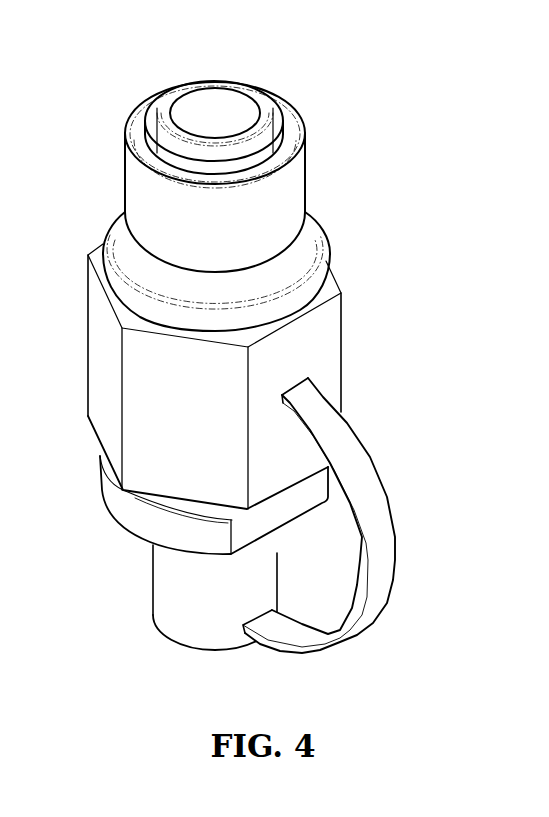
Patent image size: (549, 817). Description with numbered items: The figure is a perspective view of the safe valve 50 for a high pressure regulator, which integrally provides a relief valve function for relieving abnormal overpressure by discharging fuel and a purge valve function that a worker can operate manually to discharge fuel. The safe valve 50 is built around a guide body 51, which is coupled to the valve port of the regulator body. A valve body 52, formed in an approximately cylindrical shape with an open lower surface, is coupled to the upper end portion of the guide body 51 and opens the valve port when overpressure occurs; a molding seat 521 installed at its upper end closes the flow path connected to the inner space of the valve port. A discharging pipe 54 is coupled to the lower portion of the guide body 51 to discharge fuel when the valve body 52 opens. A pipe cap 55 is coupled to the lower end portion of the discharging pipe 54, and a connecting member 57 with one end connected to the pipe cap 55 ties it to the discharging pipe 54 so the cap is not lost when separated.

The safe valve 50 is at (395, 61).
The guide body 51 is at (328, 352).
The valve body 52 is at (263, 152).
The molding seat 521 is at (233, 102).
The discharging pipe 54 is at (127, 512).
The pipe cap 55 is at (178, 605).
The connecting member 57 is at (380, 540).